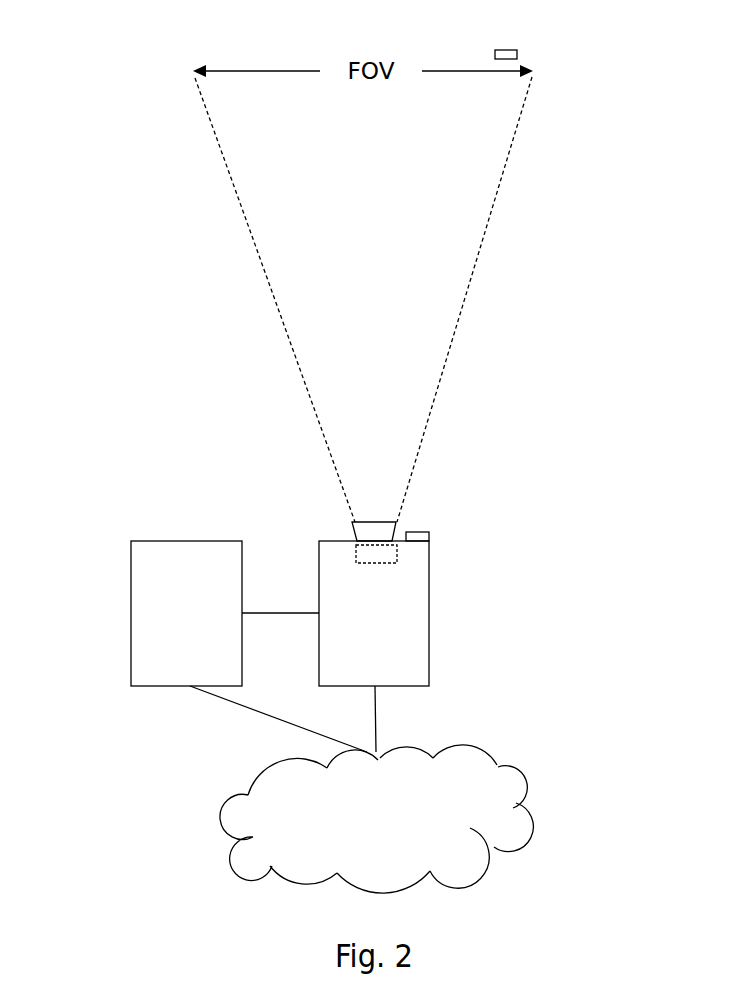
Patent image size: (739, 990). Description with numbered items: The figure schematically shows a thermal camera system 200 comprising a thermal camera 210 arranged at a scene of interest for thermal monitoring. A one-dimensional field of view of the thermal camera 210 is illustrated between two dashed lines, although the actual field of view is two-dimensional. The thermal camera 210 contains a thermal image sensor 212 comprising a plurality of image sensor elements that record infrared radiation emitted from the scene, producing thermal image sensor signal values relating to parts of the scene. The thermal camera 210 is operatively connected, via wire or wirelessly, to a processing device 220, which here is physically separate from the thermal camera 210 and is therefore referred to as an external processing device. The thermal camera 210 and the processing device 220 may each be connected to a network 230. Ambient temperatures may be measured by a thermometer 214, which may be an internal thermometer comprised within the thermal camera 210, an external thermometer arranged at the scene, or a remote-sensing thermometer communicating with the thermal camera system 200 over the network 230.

The thermal camera system 200 is at (606, 468).
The thermal camera 210 is at (429, 606).
The thermal image sensor 212 is at (397, 553).
The thermometer 214 is at (429, 536).
The processing device 220 is at (131, 581).
The network 230 is at (525, 781).